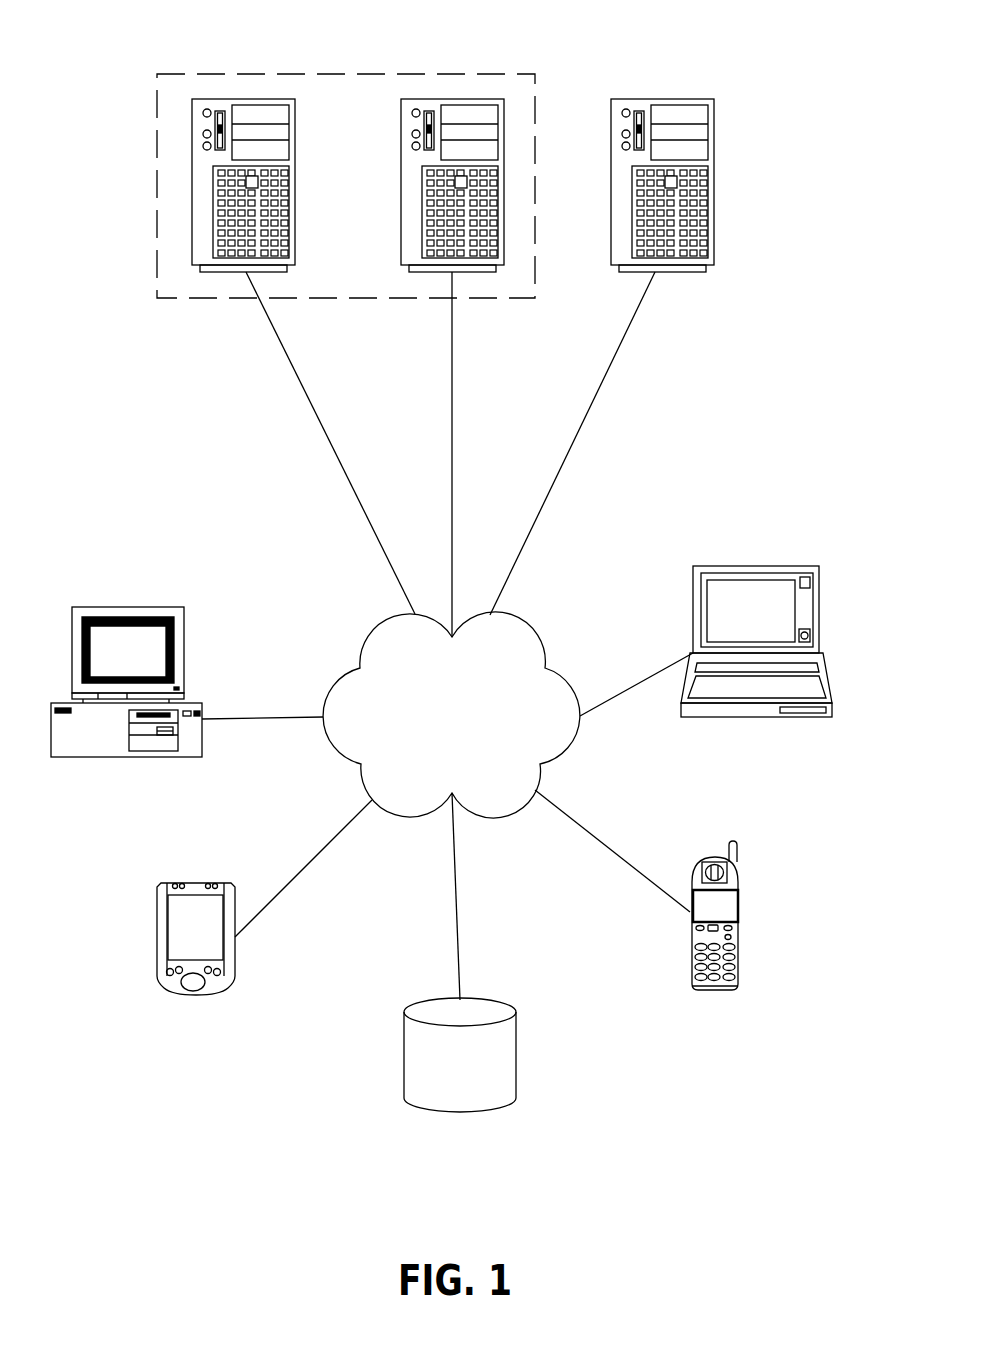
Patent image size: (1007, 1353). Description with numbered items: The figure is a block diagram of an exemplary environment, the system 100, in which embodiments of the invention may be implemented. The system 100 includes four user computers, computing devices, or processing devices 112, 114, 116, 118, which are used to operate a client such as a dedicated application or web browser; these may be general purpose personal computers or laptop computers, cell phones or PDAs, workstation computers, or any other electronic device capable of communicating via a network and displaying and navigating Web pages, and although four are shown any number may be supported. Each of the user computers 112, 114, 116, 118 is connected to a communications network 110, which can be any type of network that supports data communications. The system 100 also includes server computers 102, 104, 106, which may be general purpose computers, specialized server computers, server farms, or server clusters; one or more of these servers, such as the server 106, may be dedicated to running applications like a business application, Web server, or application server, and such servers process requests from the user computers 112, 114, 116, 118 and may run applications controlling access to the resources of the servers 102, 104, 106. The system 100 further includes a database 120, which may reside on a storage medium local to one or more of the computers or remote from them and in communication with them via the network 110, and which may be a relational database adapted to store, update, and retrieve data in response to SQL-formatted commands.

The system 100 is at (806, 104).
The server computer 102 is at (226, 99).
The server computer 104 is at (450, 99).
The server computer 106 is at (717, 183).
The communications network 110 is at (433, 760).
The user computer 112 is at (124, 607).
The user computer 114 is at (757, 566).
The user computer 116 is at (712, 993).
The user computer 118 is at (195, 997).
The database 120 is at (441, 1097).